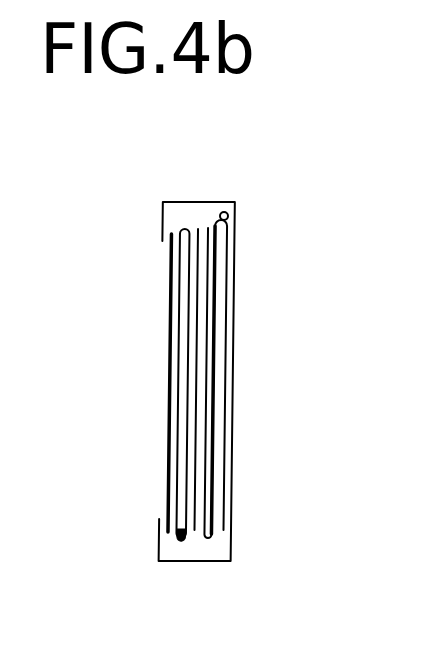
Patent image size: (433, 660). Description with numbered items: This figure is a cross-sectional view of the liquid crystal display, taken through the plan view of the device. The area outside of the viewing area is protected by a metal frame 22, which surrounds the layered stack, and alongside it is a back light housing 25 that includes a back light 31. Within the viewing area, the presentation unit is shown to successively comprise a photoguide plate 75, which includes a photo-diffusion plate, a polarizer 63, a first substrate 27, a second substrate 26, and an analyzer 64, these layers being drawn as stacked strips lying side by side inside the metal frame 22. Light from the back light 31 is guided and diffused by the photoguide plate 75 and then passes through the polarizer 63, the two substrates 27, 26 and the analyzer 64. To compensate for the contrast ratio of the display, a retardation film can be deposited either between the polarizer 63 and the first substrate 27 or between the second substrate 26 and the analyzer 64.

The metal frame 22 is at (230, 562).
The back light housing 25 is at (222, 212).
The second substrate 26 is at (173, 273).
The first substrate 27 is at (186, 542).
The back light 31 is at (229, 220).
The polarizer 63 is at (228, 249).
The analyzer 64 is at (169, 395).
The photoguide plate 75 is at (221, 328).